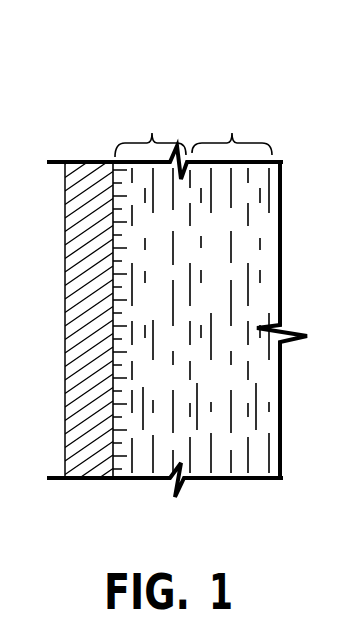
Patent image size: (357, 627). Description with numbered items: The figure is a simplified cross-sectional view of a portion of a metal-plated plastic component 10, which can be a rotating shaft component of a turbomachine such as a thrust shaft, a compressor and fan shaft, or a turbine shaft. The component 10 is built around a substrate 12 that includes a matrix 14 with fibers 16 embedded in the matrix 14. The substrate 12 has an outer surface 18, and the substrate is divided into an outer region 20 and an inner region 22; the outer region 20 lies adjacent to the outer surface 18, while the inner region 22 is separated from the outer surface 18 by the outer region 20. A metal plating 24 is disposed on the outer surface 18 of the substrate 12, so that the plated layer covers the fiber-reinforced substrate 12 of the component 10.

The component 10 is at (107, 86).
The substrate 12 is at (283, 208).
The matrix 14 is at (263, 298).
The fibers 16 is at (117, 161).
The outer surface 18 is at (106, 315).
The outer region 20 is at (150, 131).
The inner region 22 is at (232, 130).
The metal plating 24 is at (77, 390).